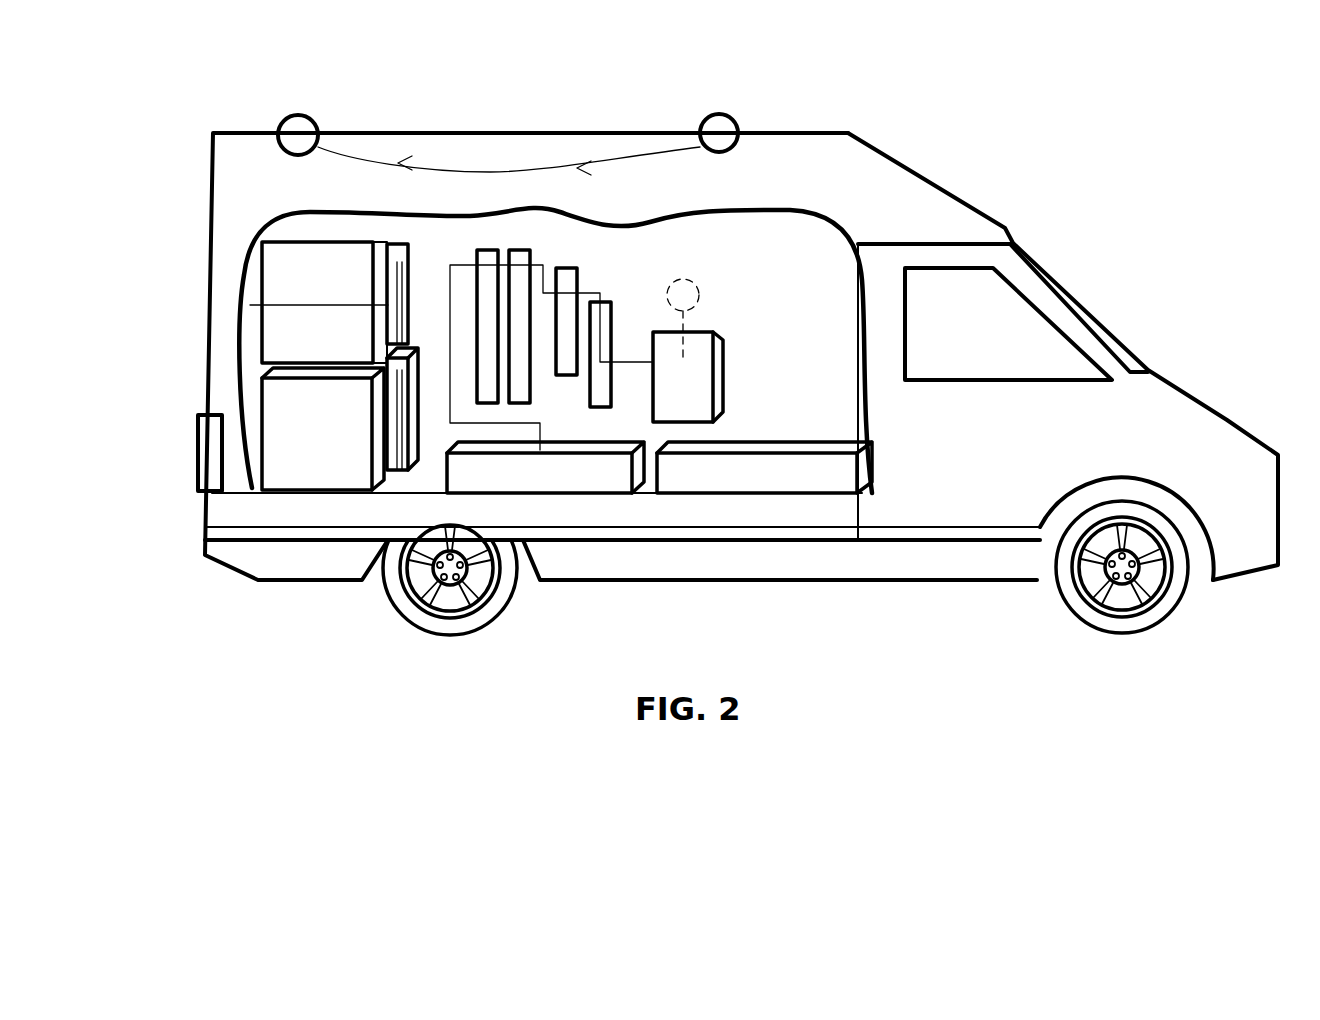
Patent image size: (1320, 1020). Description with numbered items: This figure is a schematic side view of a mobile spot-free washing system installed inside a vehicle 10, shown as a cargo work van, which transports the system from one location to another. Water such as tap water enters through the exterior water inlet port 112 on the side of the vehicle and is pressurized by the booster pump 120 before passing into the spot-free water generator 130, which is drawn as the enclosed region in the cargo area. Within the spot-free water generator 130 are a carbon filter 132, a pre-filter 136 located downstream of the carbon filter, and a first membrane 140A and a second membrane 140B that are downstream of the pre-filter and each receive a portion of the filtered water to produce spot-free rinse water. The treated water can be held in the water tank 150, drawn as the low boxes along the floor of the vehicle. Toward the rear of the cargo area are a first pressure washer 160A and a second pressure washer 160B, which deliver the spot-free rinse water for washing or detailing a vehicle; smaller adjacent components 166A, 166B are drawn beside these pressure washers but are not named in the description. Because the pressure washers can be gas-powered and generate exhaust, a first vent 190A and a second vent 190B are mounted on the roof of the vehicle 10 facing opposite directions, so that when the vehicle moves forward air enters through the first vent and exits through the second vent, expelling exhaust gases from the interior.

The vehicle 10 is at (1158, 393).
The exterior water inlet port 112 is at (699, 288).
The booster pump 120 is at (702, 368).
The spot-free water generator 130 is at (612, 248).
The carbon filter 132 is at (598, 322).
The pre-filter 136 is at (568, 290).
The first membrane 140A is at (520, 262).
The second membrane 140B is at (487, 262).
The water tank 150 is at (590, 480).
The first pressure washer 160A is at (272, 399).
The second pressure washer 160B is at (385, 333).
The first cooling unit 166A is at (272, 262).
The second cooling unit 166B is at (407, 250).
The first vent 190A is at (290, 116).
The second vent 190B is at (706, 115).